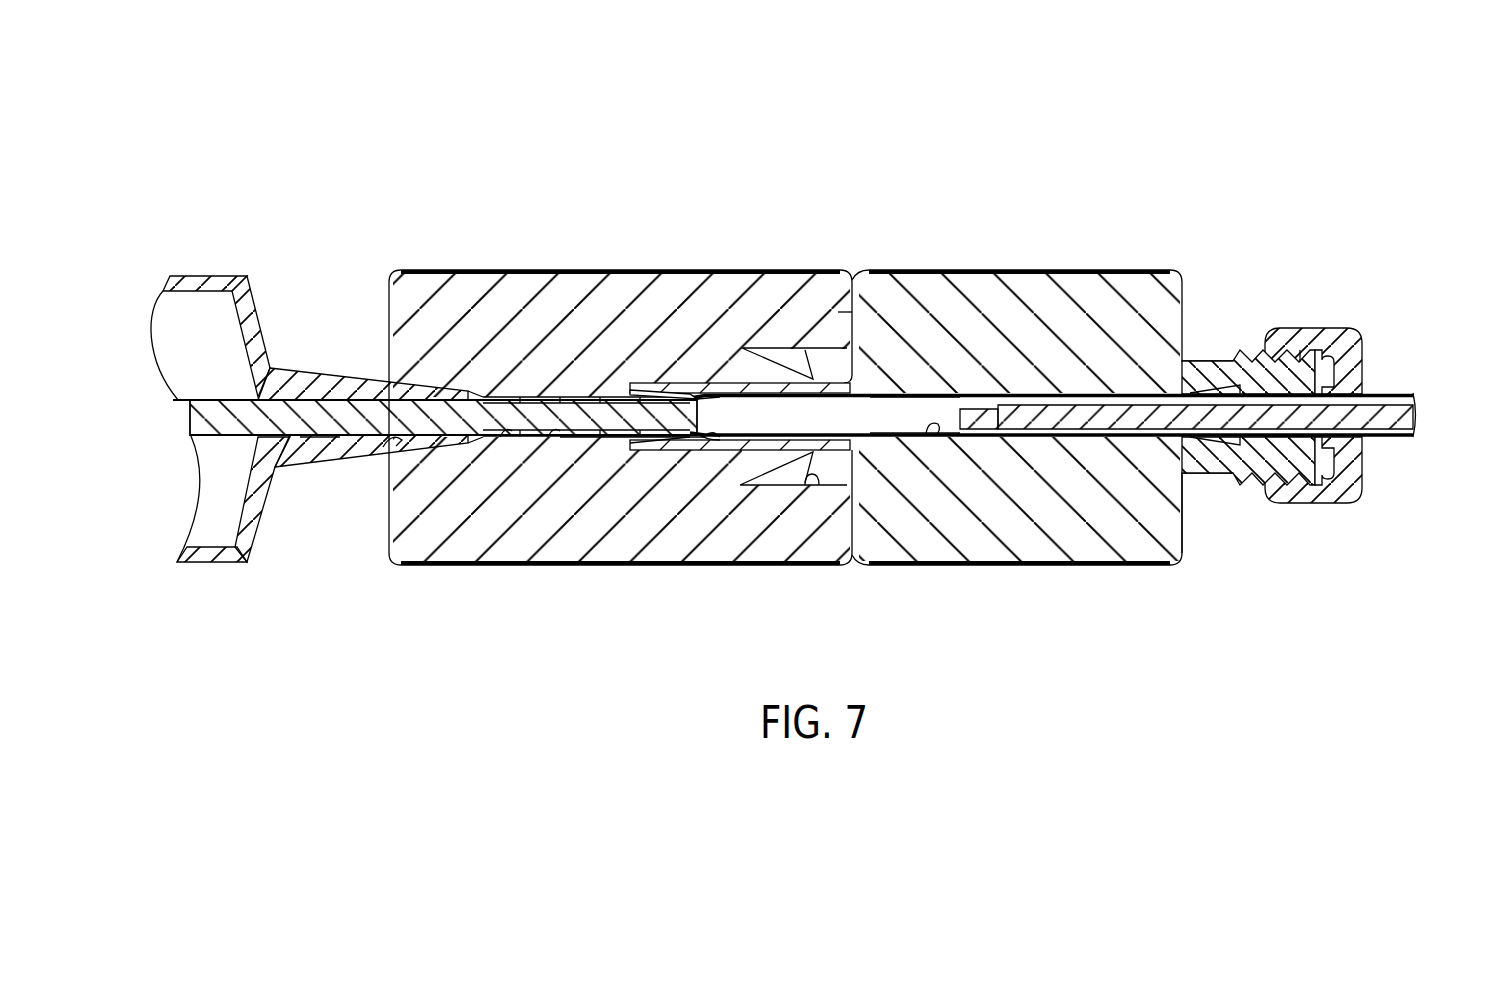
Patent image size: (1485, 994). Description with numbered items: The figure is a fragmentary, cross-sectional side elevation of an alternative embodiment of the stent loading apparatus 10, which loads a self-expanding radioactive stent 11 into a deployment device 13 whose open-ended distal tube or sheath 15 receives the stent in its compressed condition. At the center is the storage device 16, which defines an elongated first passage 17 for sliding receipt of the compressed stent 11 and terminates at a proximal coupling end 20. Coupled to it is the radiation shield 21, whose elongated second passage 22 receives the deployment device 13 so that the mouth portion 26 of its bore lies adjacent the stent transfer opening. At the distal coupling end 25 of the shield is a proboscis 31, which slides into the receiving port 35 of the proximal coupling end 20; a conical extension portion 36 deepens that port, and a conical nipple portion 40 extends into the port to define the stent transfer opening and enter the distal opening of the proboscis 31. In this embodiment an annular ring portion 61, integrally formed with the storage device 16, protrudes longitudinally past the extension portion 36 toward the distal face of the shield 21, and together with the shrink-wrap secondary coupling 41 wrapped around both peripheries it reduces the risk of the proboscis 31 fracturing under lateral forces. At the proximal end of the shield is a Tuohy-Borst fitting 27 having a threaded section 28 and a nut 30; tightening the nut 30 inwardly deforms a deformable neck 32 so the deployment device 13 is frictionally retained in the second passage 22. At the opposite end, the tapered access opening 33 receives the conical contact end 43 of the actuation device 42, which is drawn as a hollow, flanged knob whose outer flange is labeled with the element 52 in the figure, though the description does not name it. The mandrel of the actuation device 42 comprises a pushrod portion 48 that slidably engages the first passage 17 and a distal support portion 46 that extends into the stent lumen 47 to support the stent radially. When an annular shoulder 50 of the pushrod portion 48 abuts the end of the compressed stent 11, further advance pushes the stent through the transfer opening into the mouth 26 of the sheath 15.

The stent loading apparatus 10 is at (1058, 148).
The self-expanding stent 11 is at (540, 388).
The deployment device 13 is at (1390, 392).
The distal tube or sheath 15 is at (940, 394).
The storage device 16 is at (410, 568).
The first passage 17 is at (555, 440).
The proximal coupling end 20 is at (724, 380).
The radiation shield 21 is at (1194, 516).
The second passage 22 is at (933, 440).
The distal coupling end 25 is at (735, 383).
The mouth portion 26 is at (688, 452).
The Tuohy-Borst fitting 27 is at (1358, 326).
The threaded section 28 is at (1252, 480).
The nut 30 is at (1364, 346).
The proboscis 31 is at (727, 440).
The deformable neck 32 is at (1303, 388).
The access opening 33 is at (383, 448).
The receiving port 35 is at (670, 386).
The extension portion 36 is at (803, 352).
The nipple portion 40 is at (634, 452).
The secondary coupling 41 is at (1026, 572).
The actuation device 42 is at (216, 272).
The contact end 43 is at (330, 368).
The support portion 46 is at (597, 440).
The stent lumen 47 is at (495, 440).
The pushrod portion 48 is at (332, 440).
The annular shoulder 50 is at (502, 396).
The knob flange 52 is at (217, 563).
The annular ring portion 61 is at (848, 312).